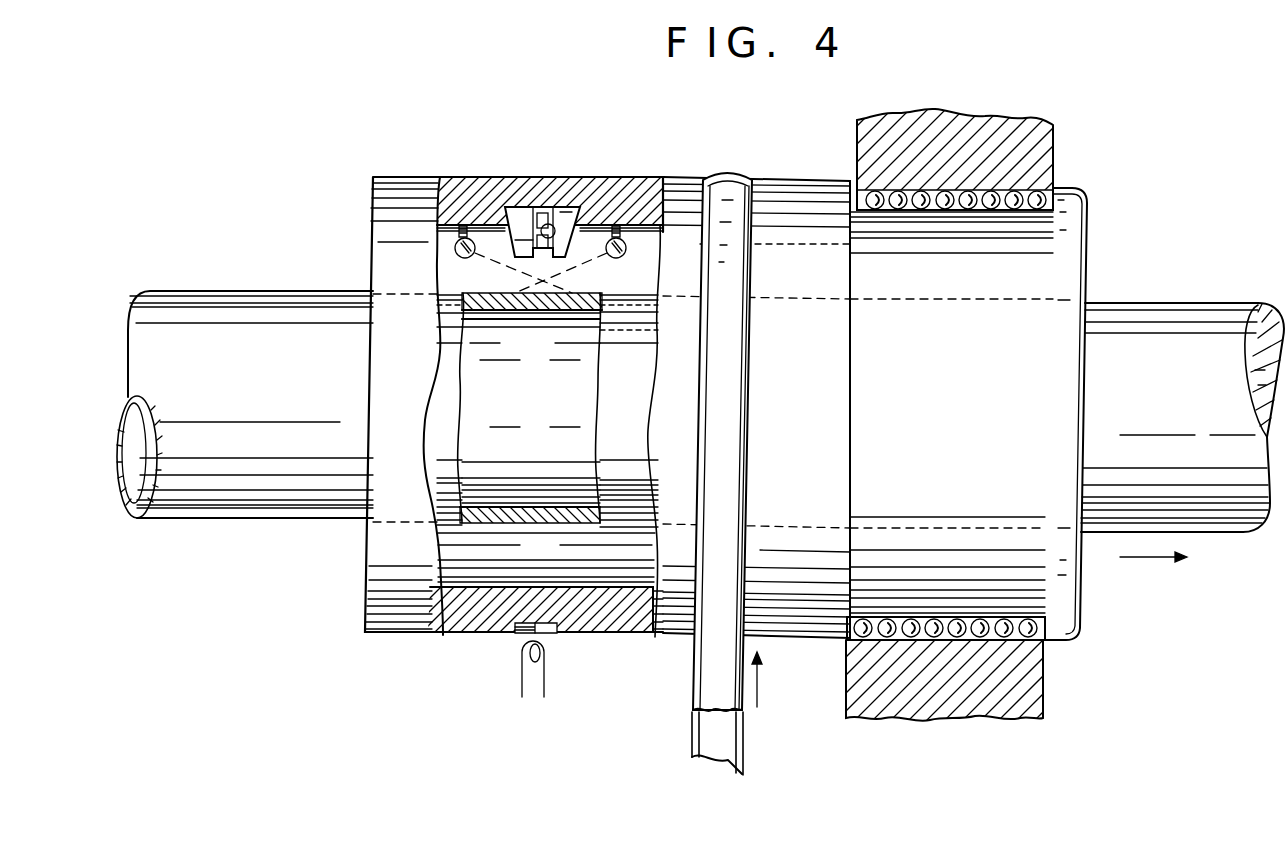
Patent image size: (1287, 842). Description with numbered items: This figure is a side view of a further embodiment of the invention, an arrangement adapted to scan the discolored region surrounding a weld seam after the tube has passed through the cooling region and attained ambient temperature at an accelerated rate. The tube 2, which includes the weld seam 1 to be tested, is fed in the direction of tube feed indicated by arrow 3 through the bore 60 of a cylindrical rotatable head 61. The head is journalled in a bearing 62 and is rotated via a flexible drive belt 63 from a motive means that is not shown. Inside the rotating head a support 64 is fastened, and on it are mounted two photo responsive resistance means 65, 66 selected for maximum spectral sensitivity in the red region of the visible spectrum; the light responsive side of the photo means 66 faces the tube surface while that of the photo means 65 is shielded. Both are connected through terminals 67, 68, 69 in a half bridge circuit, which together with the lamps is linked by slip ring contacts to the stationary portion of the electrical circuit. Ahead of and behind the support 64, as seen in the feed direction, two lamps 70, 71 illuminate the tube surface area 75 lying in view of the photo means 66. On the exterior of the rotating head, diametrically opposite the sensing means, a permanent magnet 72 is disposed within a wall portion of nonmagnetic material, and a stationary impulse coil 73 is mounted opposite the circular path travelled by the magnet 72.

The weld seam 1 is at (270, 290).
The tube 2 is at (1207, 525).
The arrow 3 is at (1150, 558).
The bore 60 is at (468, 538).
The cylindrical rotatable head 61 is at (797, 190).
The bearing 62 is at (963, 211).
The flexible drive belt 63 is at (737, 180).
The support 64 is at (568, 231).
The photo responsive resistance means 65 is at (547, 216).
The photo responsive resistance means 66 is at (542, 236).
The terminal 67 is at (526, 222).
The terminal 68 is at (521, 239).
The terminal 69 is at (574, 229).
The lamp 70 is at (624, 256).
The lamp 71 is at (455, 252).
The permanent magnet 72 is at (520, 633).
The impulse coil 73 is at (553, 648).
The tube surface area 75 is at (535, 303).